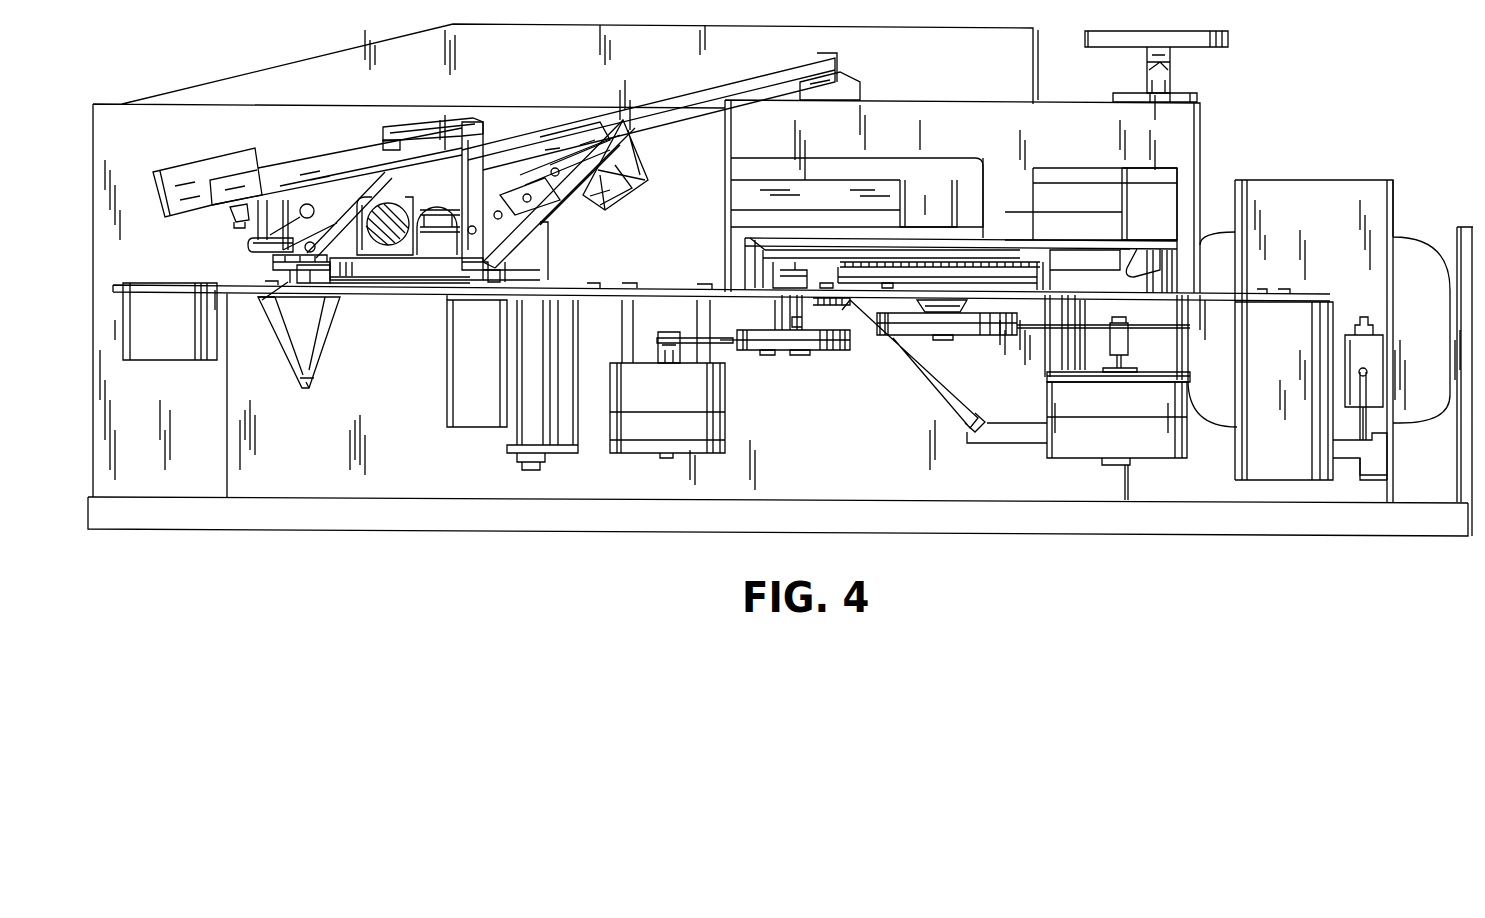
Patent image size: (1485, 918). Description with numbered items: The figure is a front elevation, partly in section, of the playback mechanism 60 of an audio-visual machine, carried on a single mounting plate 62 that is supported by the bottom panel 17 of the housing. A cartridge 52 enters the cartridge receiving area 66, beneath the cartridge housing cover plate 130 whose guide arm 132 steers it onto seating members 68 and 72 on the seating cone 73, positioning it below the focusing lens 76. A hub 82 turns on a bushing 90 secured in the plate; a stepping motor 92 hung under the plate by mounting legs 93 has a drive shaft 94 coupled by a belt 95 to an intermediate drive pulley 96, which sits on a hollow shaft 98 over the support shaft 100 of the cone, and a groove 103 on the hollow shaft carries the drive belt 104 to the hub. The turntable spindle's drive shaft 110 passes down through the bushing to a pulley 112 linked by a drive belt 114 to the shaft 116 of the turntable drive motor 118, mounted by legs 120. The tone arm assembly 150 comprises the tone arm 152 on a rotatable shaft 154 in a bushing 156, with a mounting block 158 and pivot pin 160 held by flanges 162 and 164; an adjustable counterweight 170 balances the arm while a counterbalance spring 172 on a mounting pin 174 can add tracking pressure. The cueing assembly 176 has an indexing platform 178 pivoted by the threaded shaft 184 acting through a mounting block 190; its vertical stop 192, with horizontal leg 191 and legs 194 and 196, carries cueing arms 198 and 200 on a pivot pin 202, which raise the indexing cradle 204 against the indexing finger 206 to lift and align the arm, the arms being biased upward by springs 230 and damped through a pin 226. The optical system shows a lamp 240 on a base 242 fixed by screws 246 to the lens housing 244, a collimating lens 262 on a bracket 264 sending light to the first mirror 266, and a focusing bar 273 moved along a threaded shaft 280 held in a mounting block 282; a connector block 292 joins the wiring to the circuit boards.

The bottom panel 17 is at (1080, 518).
The cartridge 52 is at (717, 224).
The playback mechanism 60 is at (783, 440).
The mounting plate 62 is at (378, 296).
The cartridge receiving area 66 is at (1220, 165).
The seating member 68 is at (764, 265).
The seating member 72 is at (1138, 275).
The seating cone 73 is at (1080, 290).
The focusing lens 76 is at (900, 190).
The hub 82 is at (847, 265).
The bushing 90 is at (960, 303).
The stepping motor 92 is at (725, 395).
The mounting legs 93 is at (703, 322).
The drive shaft 94 is at (662, 352).
The belt 95 is at (733, 347).
The intermediate drive pulley 96 is at (840, 352).
The hollow shaft 98 is at (797, 345).
The support shaft 100 is at (797, 353).
The groove 103 is at (805, 262).
The drive belt 104 is at (876, 280).
The drive shaft 110 is at (928, 325).
The pulley 112 is at (962, 340).
The drive belt 114 is at (1033, 330).
The shaft 116 is at (1122, 340).
The turntable drive motor 118 is at (1075, 450).
The mounting legs 120 is at (1065, 365).
The cartridge housing cover plate 130 is at (1188, 123).
The guide arm 132 is at (1015, 230).
The tone arm assembly 150 is at (268, 128).
The tone arm 152 is at (688, 98).
The rotatable shaft 154 is at (266, 288).
The bushing 156 is at (283, 345).
The mounting block 158 is at (250, 248).
The pivot pin 160 is at (333, 270).
The depending flange 162 is at (268, 185).
The depending flange 164 is at (277, 257).
The adjustable counterweight 170 is at (190, 180).
The counterbalance spring 172 is at (255, 236).
The mounting pin 174 is at (306, 203).
The cueing assembly 176 is at (578, 214).
The indexing platform 178 is at (395, 277).
The threaded shaft 184 is at (368, 190).
The mounting block 190 is at (368, 224).
The horizontal leg 191 is at (470, 140).
The vertical stop 192 is at (428, 92).
The downwardly extending leg 194 is at (388, 137).
The downwardly extending leg 196 is at (478, 234).
The cueing arm 198 is at (548, 160).
The cueing arm 200 is at (628, 125).
The pivot pin 202 is at (475, 240).
The indexing cradle 204 is at (622, 186).
The indexing finger 206 is at (592, 150).
The pin 226 is at (612, 170).
The springs 230 is at (437, 206).
The lamp 240 is at (1367, 372).
The base 242 is at (1375, 476).
The lens housing 244 is at (1250, 458).
The screws 246 is at (1390, 440).
The collimating lens 262 is at (1082, 365).
The bracket 264 is at (1028, 442).
The first mirror 266 is at (968, 420).
The focusing bar 273 is at (805, 180).
The threaded shaft 280 is at (1172, 82).
The mounting block 282 is at (1128, 93).
The connector block 292 is at (165, 355).